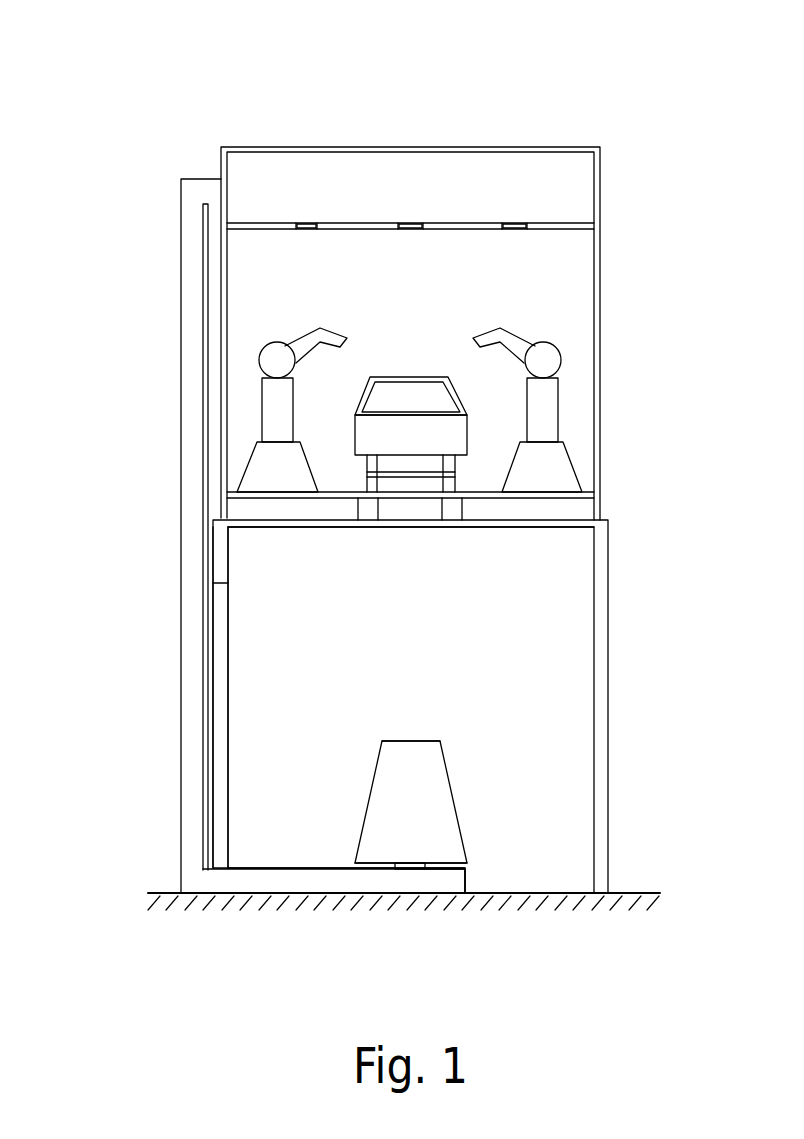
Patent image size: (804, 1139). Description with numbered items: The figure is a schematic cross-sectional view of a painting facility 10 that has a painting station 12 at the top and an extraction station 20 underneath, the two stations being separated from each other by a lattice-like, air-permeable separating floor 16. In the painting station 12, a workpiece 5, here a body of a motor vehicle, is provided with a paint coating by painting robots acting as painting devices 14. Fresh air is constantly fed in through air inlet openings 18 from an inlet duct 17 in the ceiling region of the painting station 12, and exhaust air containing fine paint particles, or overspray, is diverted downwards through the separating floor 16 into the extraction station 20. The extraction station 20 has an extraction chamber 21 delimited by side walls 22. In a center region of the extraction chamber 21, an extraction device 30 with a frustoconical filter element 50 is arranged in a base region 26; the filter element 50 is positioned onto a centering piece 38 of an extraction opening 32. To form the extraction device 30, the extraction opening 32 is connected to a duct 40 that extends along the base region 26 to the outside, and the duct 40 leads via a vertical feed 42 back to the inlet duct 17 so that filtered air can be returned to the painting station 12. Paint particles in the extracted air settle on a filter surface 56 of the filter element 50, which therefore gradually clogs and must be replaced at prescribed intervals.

The painting facility 10 is at (673, 62).
The painting station 12 is at (245, 260).
The painting device 14 is at (277, 413).
The separating floor 16 is at (567, 512).
The inlet duct 17 is at (562, 183).
The air inlet opening 18 is at (300, 222).
The workpiece 5 is at (407, 388).
The extraction station 20 is at (272, 655).
The extraction chamber 21 is at (272, 772).
The side wall 22 is at (220, 550).
The base region 26 is at (500, 890).
The extraction device 30 is at (258, 882).
The extraction opening 32 is at (403, 870).
The centering piece 38 is at (420, 870).
The duct 40 is at (370, 878).
The vertical feed 42 is at (193, 494).
The filter element 50 is at (432, 828).
The filter surface 56 is at (450, 775).